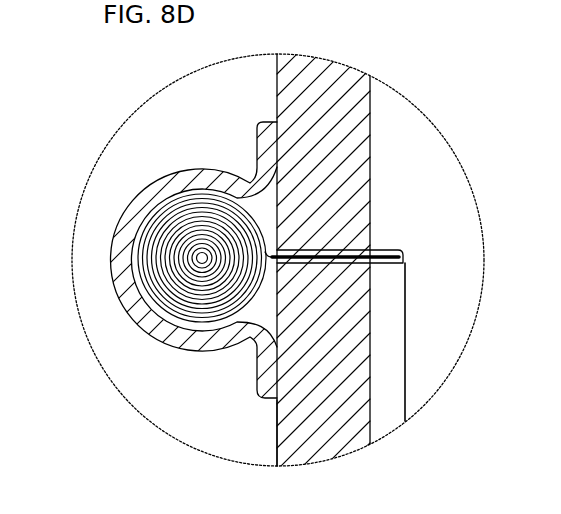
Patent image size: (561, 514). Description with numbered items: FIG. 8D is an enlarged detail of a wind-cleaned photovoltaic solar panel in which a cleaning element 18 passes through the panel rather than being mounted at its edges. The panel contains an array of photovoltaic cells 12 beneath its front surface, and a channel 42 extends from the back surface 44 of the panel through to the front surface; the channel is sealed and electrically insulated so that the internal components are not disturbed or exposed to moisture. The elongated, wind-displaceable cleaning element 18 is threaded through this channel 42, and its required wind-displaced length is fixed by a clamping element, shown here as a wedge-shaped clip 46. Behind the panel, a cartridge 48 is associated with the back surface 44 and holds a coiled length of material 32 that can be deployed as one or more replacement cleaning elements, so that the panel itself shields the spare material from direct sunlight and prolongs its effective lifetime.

The photovoltaic cells 12 is at (374, 120).
The cleaning element 18 is at (405, 360).
The length of material 32 is at (136, 282).
The channel 42 is at (372, 265).
The back surface 44 is at (276, 451).
The wedge-shaped clip 46 is at (398, 247).
The cartridge 48 is at (145, 193).